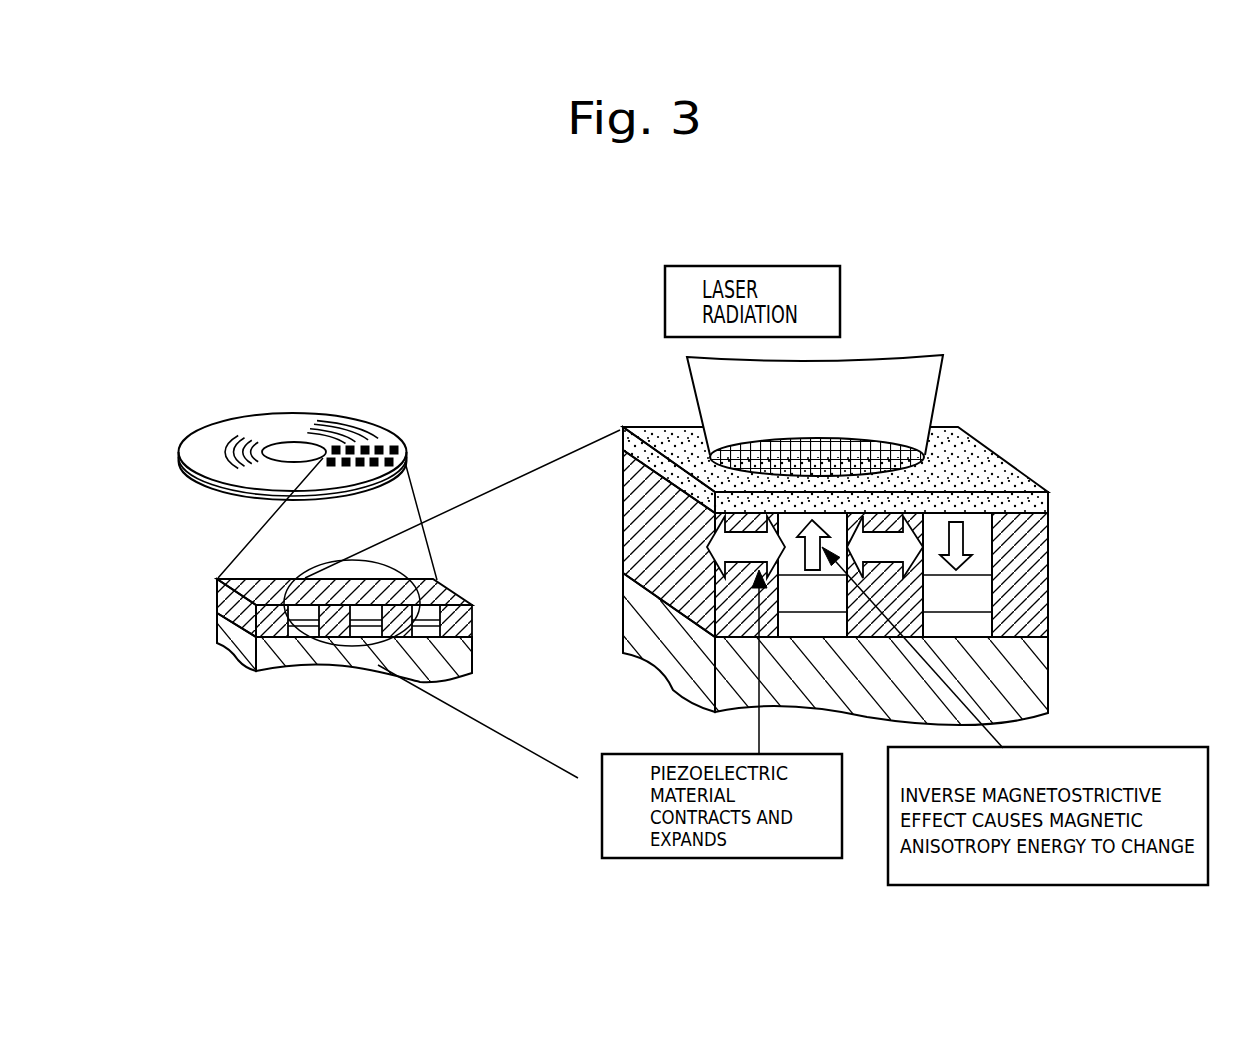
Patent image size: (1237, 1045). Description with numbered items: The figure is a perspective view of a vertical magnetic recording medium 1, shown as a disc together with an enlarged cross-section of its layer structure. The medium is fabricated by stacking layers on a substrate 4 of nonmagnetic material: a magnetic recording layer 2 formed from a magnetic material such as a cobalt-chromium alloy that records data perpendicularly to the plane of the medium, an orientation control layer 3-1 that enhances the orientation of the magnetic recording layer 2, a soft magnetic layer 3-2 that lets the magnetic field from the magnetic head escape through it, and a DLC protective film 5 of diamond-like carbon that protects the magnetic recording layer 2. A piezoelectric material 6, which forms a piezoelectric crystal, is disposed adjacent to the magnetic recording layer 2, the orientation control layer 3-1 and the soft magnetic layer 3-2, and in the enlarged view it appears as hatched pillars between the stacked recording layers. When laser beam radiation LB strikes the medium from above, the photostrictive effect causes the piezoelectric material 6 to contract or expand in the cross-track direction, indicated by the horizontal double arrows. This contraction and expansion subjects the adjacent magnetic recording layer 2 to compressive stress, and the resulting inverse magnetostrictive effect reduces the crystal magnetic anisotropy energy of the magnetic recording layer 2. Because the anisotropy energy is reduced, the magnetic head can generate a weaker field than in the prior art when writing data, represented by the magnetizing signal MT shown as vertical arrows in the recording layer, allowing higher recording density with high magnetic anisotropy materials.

The magnetic recording medium 1 is at (270, 427).
The magnetic recording layer 2 is at (275, 587).
The orientation control layer 3-1 is at (472, 620).
The soft magnetic layer 3-2 is at (472, 630).
The substrate 4 is at (295, 655).
The DLC protective film 5 is at (988, 472).
The piezoelectric material 6 is at (472, 604).
The magnetizing signal MT is at (960, 535).
The laser beam radiation LB is at (907, 372).